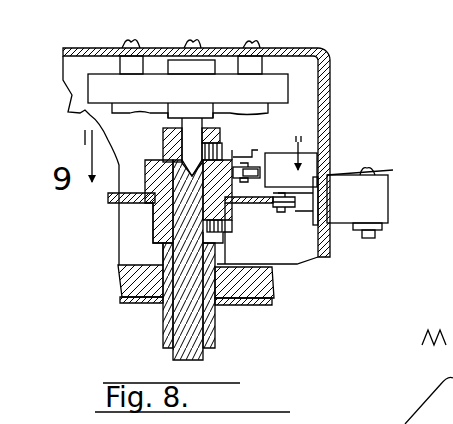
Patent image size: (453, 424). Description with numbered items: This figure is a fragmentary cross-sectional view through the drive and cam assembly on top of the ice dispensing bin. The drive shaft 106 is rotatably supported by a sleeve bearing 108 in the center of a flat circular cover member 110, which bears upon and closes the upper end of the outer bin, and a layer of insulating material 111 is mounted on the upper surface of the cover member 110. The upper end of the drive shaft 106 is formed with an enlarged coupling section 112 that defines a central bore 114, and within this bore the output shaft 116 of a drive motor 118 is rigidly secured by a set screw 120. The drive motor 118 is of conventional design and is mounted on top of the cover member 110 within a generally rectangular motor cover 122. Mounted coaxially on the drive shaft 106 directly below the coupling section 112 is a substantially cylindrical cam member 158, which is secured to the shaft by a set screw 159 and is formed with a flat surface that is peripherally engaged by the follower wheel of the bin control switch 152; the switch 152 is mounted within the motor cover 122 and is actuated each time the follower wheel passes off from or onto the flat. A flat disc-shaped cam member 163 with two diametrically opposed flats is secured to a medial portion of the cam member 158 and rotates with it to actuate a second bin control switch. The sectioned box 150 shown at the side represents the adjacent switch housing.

The drive shaft 106 is at (216, 322).
The sleeve bearing 108 is at (219, 263).
The cover member 110 is at (138, 307).
The insulating material 111 is at (122, 283).
The coupling section 112 is at (165, 143).
The central bore 114 is at (183, 128).
The output shaft 116 is at (163, 114).
The drive motor 118 is at (298, 88).
The set screw 120 is at (231, 139).
The motor cover 122 is at (294, 45).
The box 150 is at (393, 170).
The bin control switch 152 is at (313, 148).
The cam member 158 is at (137, 178).
The set screw 159 is at (224, 227).
The cam member 163 is at (138, 208).